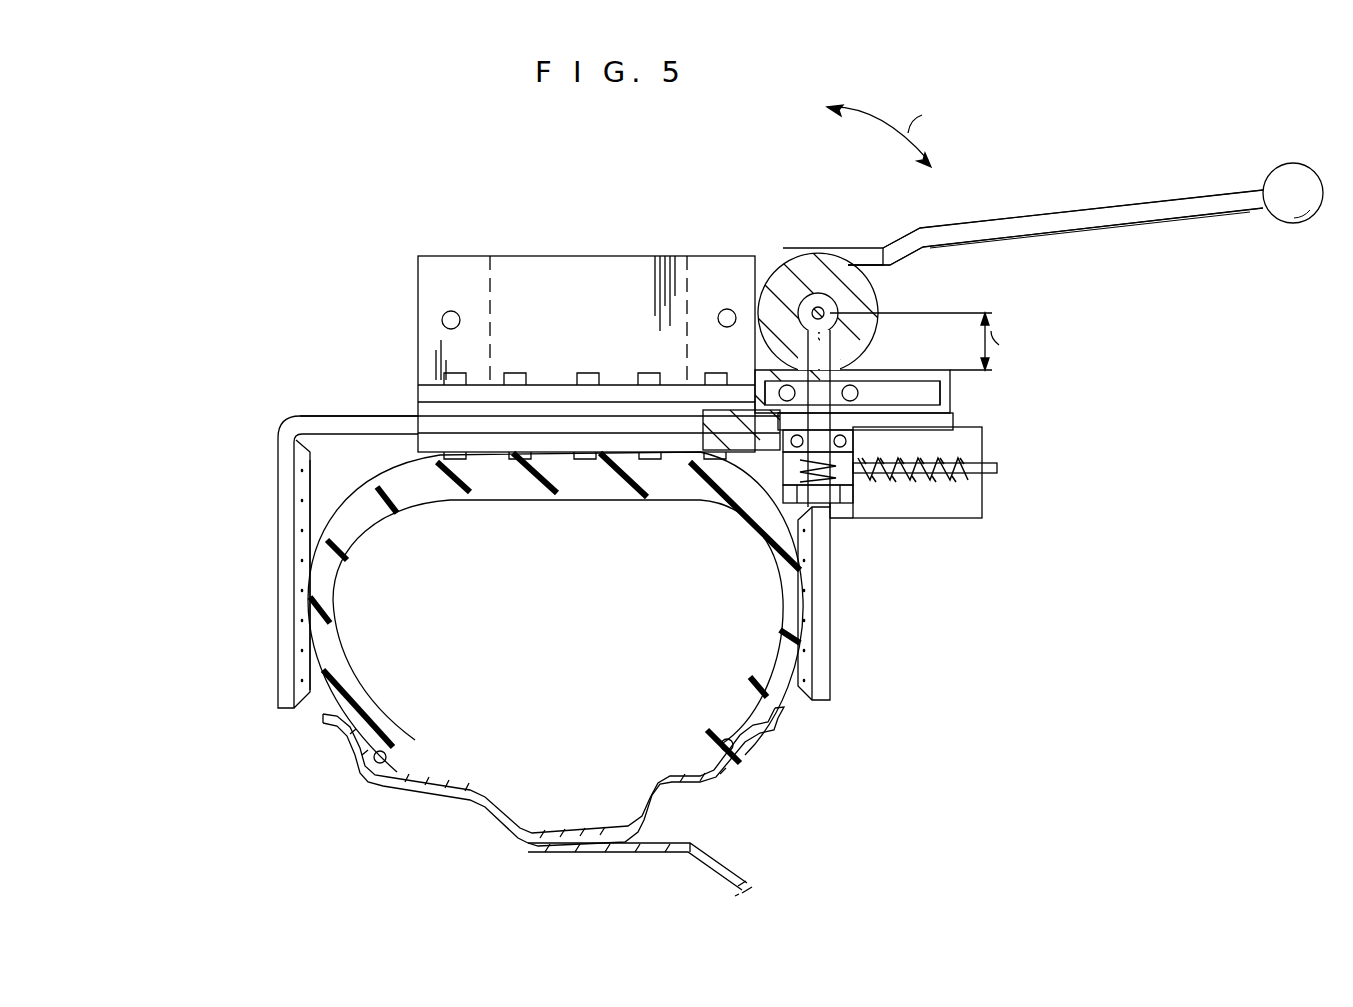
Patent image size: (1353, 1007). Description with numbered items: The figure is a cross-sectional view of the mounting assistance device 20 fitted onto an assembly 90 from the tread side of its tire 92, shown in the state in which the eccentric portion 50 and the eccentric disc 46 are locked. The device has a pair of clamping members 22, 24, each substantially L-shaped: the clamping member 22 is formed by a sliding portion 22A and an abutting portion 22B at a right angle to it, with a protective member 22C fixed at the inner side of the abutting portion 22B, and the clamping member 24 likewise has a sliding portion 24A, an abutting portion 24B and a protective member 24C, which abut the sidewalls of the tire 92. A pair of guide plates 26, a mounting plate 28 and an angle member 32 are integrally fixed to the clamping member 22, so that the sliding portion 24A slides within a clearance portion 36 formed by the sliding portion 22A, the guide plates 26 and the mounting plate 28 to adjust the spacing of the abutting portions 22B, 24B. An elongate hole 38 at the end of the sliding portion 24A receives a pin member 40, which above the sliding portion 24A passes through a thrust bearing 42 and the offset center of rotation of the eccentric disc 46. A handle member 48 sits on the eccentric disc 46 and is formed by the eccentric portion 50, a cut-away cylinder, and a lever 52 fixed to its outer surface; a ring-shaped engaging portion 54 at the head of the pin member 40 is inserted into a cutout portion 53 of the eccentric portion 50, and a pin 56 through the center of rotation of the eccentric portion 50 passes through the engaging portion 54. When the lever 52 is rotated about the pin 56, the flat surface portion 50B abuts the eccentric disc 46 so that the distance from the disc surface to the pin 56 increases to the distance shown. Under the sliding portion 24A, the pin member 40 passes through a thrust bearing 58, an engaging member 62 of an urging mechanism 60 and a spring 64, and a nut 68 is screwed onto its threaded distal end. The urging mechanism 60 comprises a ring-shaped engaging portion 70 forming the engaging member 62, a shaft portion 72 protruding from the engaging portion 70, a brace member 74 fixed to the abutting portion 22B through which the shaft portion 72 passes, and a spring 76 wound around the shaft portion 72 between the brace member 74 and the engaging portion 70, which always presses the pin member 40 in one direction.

The mounting assistance device 20 is at (358, 234).
The clamping member 22 is at (650, 350).
The sliding portion 22A is at (628, 445).
The abutting portion 22B is at (826, 660).
The protective member 22C is at (804, 617).
The clamping member 24 is at (312, 527).
The sliding portion 24A is at (356, 428).
The abutting portion 24B is at (279, 581).
The protective member 24C is at (298, 634).
The guide plates 26 is at (562, 455).
The mounting plate 28 is at (558, 432).
The angle member 32 is at (541, 270).
The clearance portion 36 is at (630, 434).
The elongate hole 38 is at (958, 420).
The pin member 40 is at (785, 418).
The thrust bearing 42 is at (866, 395).
The eccentric disc 46 is at (955, 380).
The handle member 48 is at (1077, 195).
The eccentric portion 50 is at (680, 320).
The flat surface portion 50B is at (766, 350).
The lever 52 is at (1085, 209).
The cutout portion 53 is at (770, 342).
The engaging portion 54 is at (790, 266).
The pin 56 is at (840, 302).
The thrust bearing 58 is at (850, 443).
The urging mechanism 60 is at (725, 320).
The engaging member 62 is at (934, 486).
The spring 64 is at (784, 504).
The nut 68 is at (796, 503).
The engaging portion 70 is at (872, 516).
The shaft portion 72 is at (996, 468).
The brace member 74 is at (982, 446).
The spring 76 is at (906, 484).
The assembly 90 is at (522, 852).
The tire 92 is at (517, 500).